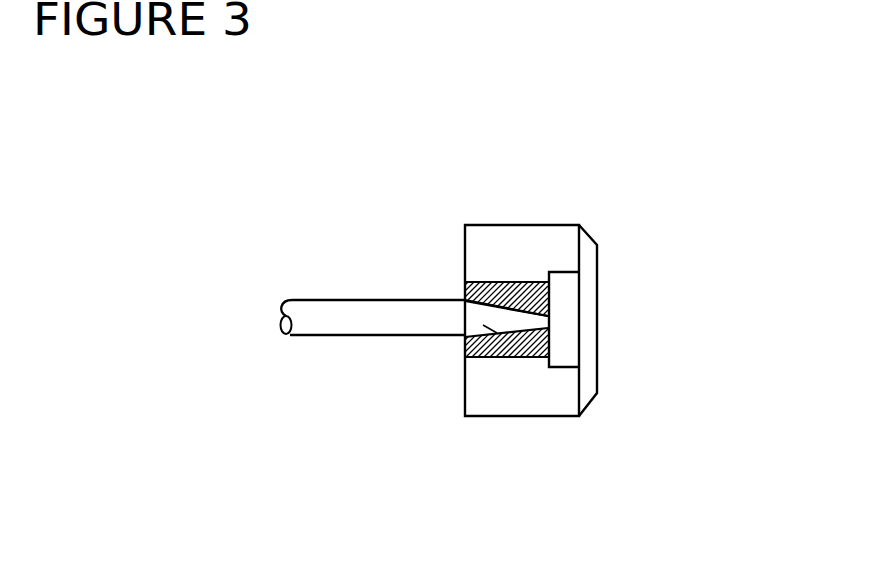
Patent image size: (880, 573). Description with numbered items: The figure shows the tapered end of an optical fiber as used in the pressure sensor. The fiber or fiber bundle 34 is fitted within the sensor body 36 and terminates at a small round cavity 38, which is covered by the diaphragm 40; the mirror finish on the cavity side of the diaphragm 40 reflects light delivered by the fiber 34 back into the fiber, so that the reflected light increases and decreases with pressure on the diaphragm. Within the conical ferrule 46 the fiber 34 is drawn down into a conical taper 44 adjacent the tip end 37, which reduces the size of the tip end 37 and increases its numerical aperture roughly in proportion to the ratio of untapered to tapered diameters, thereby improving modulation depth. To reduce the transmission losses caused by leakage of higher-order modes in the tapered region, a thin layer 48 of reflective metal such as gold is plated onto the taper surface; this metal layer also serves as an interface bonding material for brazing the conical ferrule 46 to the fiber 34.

The fiber 34 is at (390, 325).
The sensor body 36 is at (507, 250).
The tip end 37 is at (550, 317).
The cavity 38 is at (568, 367).
The diaphragm 40 is at (587, 388).
The conical taper 44 is at (487, 316).
The conical ferrule 46 is at (465, 282).
The thin layer of reflective metal 48 is at (483, 325).